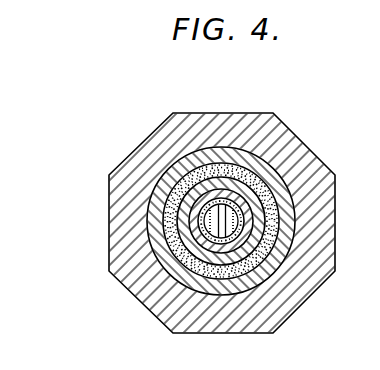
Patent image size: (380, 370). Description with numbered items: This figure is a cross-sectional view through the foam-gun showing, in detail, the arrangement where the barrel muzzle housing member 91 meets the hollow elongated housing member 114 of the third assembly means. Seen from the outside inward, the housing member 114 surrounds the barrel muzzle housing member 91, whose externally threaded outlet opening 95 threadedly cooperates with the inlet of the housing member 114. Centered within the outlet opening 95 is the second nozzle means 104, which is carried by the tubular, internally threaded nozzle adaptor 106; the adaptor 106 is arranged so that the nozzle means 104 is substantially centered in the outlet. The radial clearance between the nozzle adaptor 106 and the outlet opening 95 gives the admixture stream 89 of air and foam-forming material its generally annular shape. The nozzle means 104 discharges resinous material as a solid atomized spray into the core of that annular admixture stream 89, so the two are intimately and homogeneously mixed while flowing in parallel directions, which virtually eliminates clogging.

The hollow elongated housing member 114 is at (240, 113).
The second nozzle means 104 is at (240, 213).
The nozzle adaptor 106 is at (192, 197).
The barrel muzzle housing member 91 is at (287, 196).
The outlet opening 95 is at (284, 244).
The admixture stream 89 is at (250, 267).